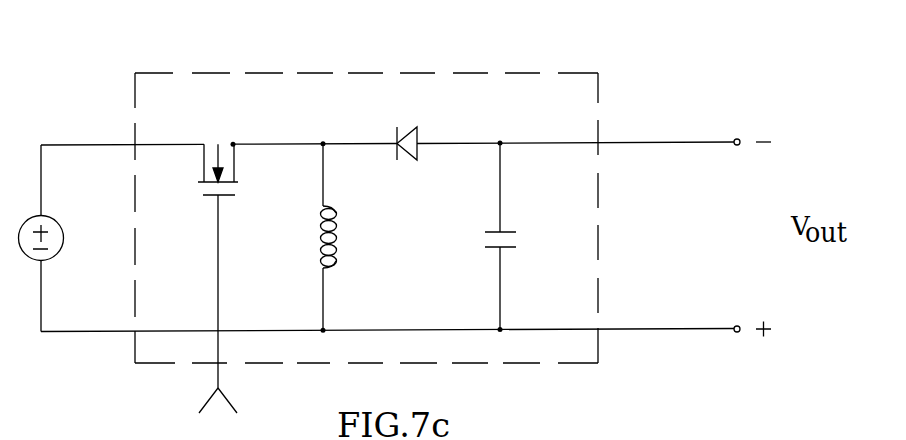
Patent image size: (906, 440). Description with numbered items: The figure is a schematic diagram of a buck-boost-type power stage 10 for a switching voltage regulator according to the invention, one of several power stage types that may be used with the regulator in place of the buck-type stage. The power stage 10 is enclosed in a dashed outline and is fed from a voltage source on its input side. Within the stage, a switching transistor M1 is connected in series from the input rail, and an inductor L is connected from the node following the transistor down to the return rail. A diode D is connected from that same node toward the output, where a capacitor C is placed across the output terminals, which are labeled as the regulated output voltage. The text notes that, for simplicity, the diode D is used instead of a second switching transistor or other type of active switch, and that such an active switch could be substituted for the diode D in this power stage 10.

The power stage 10 is at (198, 73).
The switching transistor M1 is at (220, 264).
The inductor L is at (341, 236).
The diode D is at (421, 137).
The capacitor C is at (516, 237).